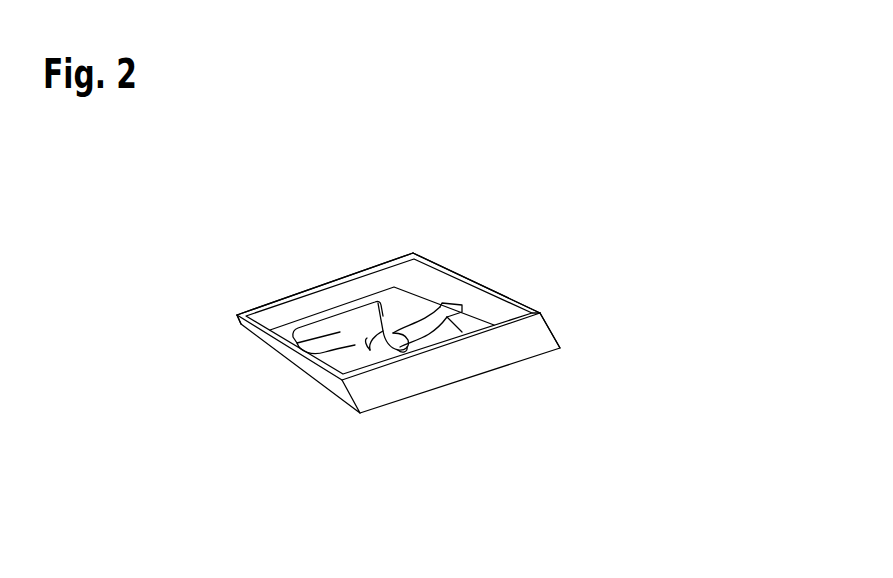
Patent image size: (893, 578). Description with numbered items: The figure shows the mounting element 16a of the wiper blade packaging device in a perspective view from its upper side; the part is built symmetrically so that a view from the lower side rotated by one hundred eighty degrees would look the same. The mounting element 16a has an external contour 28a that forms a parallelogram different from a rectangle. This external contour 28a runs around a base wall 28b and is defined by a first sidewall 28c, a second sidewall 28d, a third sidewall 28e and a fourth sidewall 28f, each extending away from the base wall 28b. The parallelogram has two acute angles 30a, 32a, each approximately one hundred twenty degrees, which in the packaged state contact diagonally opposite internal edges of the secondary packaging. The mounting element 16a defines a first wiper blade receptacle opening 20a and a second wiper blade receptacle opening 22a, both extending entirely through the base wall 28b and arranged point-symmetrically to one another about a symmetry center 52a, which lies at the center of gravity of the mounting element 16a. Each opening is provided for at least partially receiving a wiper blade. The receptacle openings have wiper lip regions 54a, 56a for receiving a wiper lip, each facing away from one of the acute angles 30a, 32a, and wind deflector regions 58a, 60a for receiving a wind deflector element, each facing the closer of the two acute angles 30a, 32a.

The mounting element 16a is at (572, 214).
The first wiper blade receptacle opening 20a is at (350, 334).
The second wiper blade receptacle opening 22a is at (448, 318).
The external contour 28a is at (527, 340).
The base wall 28b is at (413, 306).
The first sidewall 28c is at (433, 375).
The second sidewall 28d is at (500, 293).
The third sidewall 28e is at (350, 290).
The fourth sidewall 28f is at (322, 377).
The acute angle 30a is at (540, 313).
The acute angle 32a is at (240, 317).
The symmetry center 52a is at (396, 308).
The wiper lip region 54a is at (407, 347).
The wiper lip region 56a is at (367, 338).
The wind deflector region 58a is at (462, 332).
The wind deflector region 60a is at (285, 350).